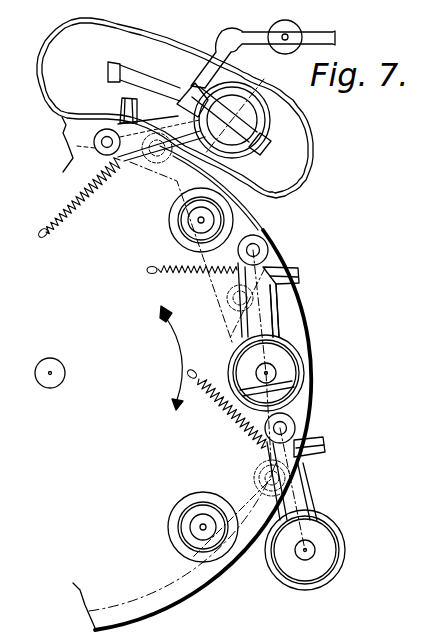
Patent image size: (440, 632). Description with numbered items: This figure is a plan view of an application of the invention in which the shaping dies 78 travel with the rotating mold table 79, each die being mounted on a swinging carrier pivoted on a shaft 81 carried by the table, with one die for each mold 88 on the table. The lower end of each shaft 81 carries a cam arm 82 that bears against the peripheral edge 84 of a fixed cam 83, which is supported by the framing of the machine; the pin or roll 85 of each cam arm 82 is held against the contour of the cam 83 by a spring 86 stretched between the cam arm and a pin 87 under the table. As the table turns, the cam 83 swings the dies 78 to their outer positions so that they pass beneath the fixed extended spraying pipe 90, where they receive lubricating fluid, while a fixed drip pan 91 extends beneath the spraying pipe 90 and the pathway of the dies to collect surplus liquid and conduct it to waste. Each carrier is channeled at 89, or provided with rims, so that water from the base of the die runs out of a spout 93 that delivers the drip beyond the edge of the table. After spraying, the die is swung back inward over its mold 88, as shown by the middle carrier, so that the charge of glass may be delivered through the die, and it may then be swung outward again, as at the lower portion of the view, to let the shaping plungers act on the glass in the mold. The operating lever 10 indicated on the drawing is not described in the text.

The operating lever 10 is at (248, 90).
The shaping die 78 is at (264, 112).
The rotating mold table 79 is at (292, 322).
The shaft 81 is at (257, 250).
The cam arm 82 is at (250, 291).
The fixed cam 83 is at (168, 556).
The peripheral edge 84 is at (306, 373).
The pin or roll 85 is at (227, 298).
The spring 86 is at (158, 282).
The pin 87 is at (147, 271).
The mold 88 is at (234, 221).
The channel 89 is at (264, 328).
The spraying pipe 90 is at (140, 77).
The drip pan 91 is at (303, 156).
The spout 93 is at (299, 271).